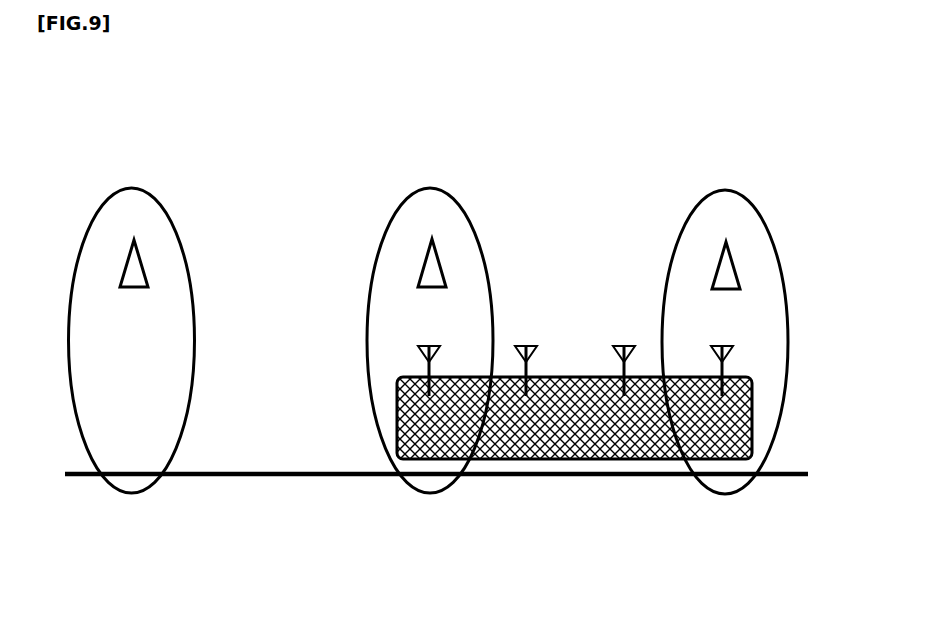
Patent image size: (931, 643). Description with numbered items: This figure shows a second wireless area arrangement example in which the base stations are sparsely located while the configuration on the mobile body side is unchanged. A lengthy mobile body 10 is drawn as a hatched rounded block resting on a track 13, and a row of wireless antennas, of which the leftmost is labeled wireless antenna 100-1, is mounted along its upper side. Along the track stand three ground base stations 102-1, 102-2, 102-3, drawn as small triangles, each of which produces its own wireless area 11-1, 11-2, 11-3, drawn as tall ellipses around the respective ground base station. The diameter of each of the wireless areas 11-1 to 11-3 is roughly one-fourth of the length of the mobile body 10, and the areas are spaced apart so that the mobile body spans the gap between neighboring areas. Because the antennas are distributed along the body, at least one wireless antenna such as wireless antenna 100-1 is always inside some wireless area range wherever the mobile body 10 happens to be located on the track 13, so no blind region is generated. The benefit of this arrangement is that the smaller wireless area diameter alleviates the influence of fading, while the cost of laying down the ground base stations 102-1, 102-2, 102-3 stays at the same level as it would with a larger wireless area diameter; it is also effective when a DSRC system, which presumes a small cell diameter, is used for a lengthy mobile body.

The mobile body 10 is at (575, 459).
The track 13 is at (283, 475).
The wireless antenna 100-1 is at (418, 346).
The wireless area 11-1 is at (182, 245).
The wireless area 11-2 is at (480, 247).
The wireless area 11-3 is at (778, 250).
The ground base station 102-1 is at (134, 240).
The ground base station 102-2 is at (432, 239).
The ground base station 102-3 is at (726, 242).